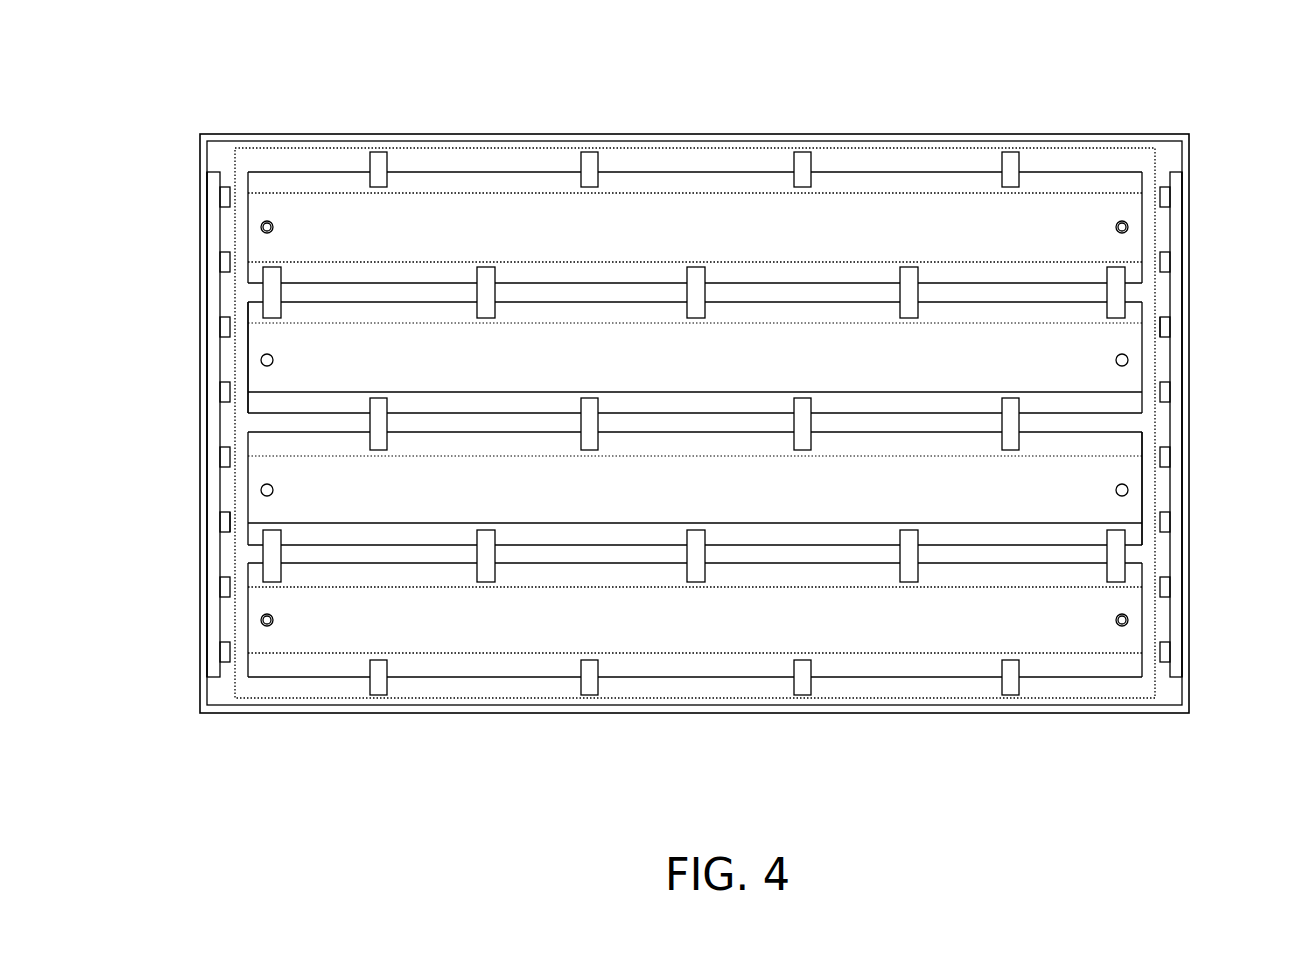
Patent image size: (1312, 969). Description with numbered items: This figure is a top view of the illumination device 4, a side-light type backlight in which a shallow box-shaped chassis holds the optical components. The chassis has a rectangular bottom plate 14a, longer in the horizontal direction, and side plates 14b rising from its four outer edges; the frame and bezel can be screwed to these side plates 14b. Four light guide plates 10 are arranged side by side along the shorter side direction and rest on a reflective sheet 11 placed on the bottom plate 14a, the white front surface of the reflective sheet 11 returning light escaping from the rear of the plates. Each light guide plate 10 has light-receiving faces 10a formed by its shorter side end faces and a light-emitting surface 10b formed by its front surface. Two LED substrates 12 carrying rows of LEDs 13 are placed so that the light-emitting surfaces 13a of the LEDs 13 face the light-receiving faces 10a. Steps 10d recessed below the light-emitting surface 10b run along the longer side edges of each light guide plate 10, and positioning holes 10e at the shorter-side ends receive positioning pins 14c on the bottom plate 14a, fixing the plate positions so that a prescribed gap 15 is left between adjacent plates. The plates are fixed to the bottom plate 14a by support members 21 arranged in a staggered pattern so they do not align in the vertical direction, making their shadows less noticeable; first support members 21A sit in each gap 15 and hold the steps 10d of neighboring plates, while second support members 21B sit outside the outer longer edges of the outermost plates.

The illumination device 4 is at (741, 378).
The light guide plate 10 is at (475, 170).
The light-receiving face 10a is at (248, 360).
The light-emitting surface 10b is at (837, 220).
The step 10d is at (977, 183).
The positioning hole 10e is at (267, 221).
The reflective sheet 11 is at (694, 485).
The LED substrate 12 is at (205, 557).
The LED 13 is at (225, 517).
The light-emitting surface 13a is at (240, 500).
The bottom plate 14a is at (753, 140).
The side plate 14b is at (205, 232).
The positioning pin 14c is at (275, 222).
The gap 15 is at (262, 290).
The support member 21 is at (694, 424).
The first support member 21A is at (698, 266).
The second support member 21B is at (590, 150).